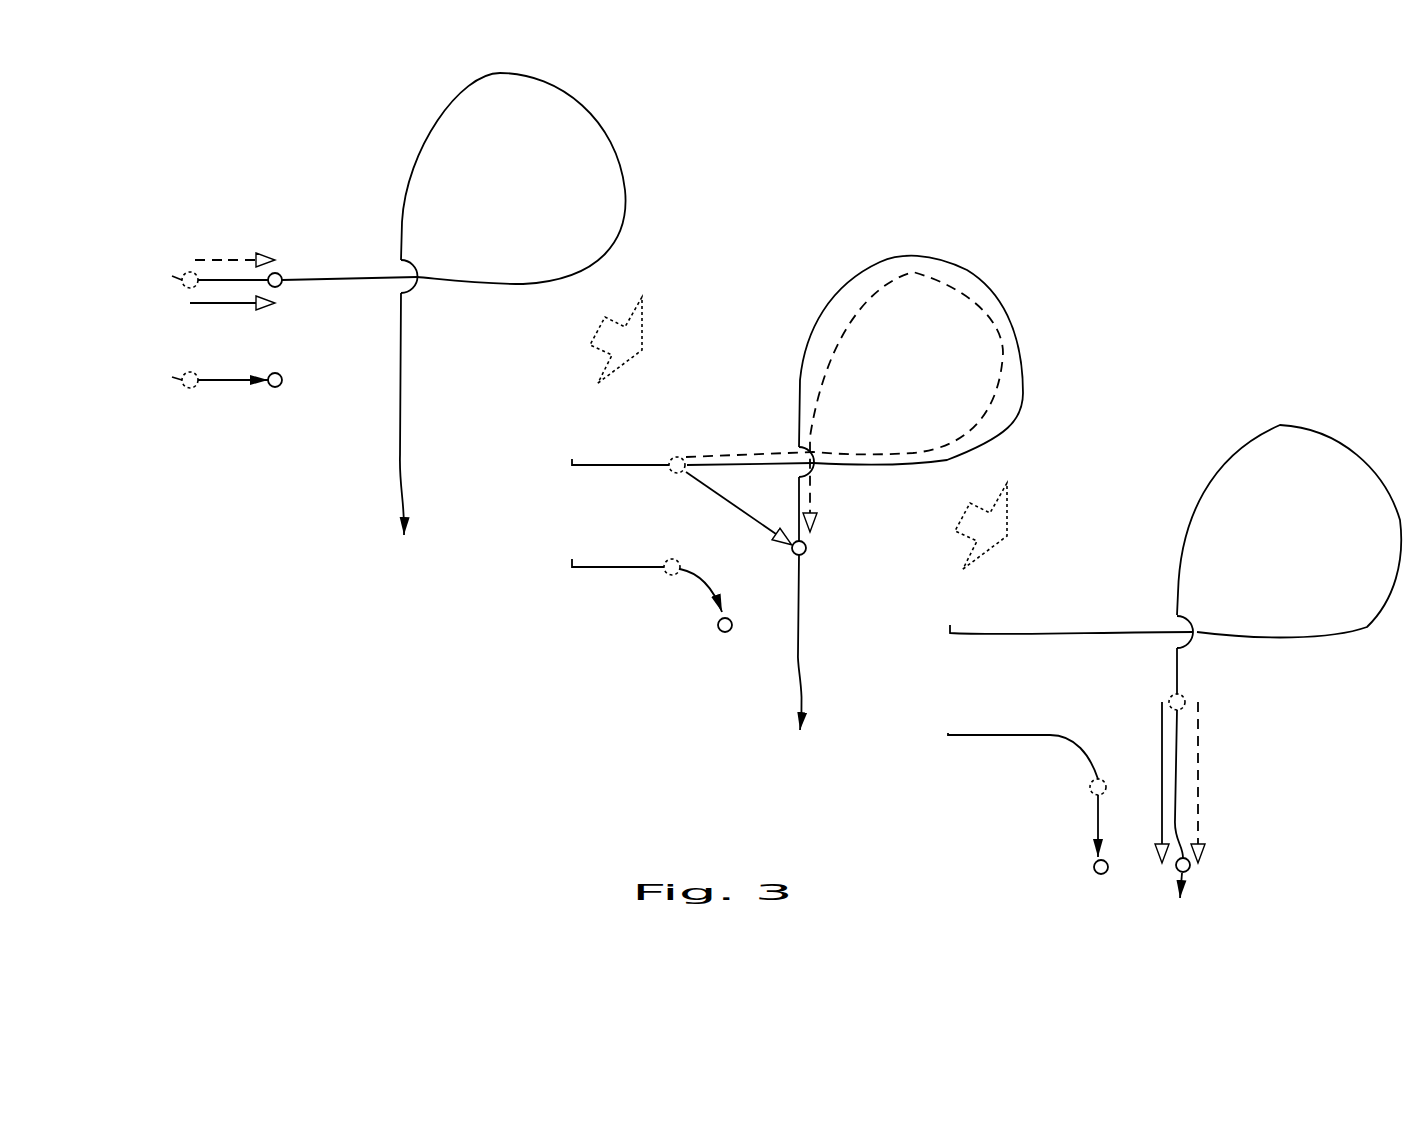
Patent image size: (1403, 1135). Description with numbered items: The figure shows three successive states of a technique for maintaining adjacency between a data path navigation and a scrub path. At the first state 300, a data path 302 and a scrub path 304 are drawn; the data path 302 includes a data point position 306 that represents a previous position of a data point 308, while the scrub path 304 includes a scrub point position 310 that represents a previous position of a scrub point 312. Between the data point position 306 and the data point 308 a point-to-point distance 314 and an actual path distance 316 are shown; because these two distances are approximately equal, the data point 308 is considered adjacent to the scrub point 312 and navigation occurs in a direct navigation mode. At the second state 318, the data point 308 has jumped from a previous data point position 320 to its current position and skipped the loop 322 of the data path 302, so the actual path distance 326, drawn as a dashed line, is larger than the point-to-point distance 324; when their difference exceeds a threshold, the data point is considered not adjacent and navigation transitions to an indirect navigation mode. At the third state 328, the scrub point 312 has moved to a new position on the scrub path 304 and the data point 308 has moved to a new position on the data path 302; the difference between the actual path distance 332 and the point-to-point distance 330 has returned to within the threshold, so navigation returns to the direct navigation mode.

The first illustrated state 300 is at (268, 116).
The data path 302 is at (172, 273).
The scrub path 304 is at (171, 373).
The data point position 306 is at (190, 260).
The data point 308 is at (280, 272).
The scrub point position 310 is at (188, 390).
The scrub point 312 is at (274, 390).
The point-to-point distance 314 is at (223, 303).
The actual path distance 316 is at (226, 258).
The second illustrated state 318 is at (750, 283).
The previous data point position 320 is at (675, 457).
The loop 322 is at (943, 257).
The point-to-point distance 324 is at (725, 503).
The actual path distance 326 is at (698, 452).
The third illustrated state 328 is at (1165, 422).
The point-to-point distance 330 is at (1160, 745).
The actual path distance 332 is at (1202, 745).